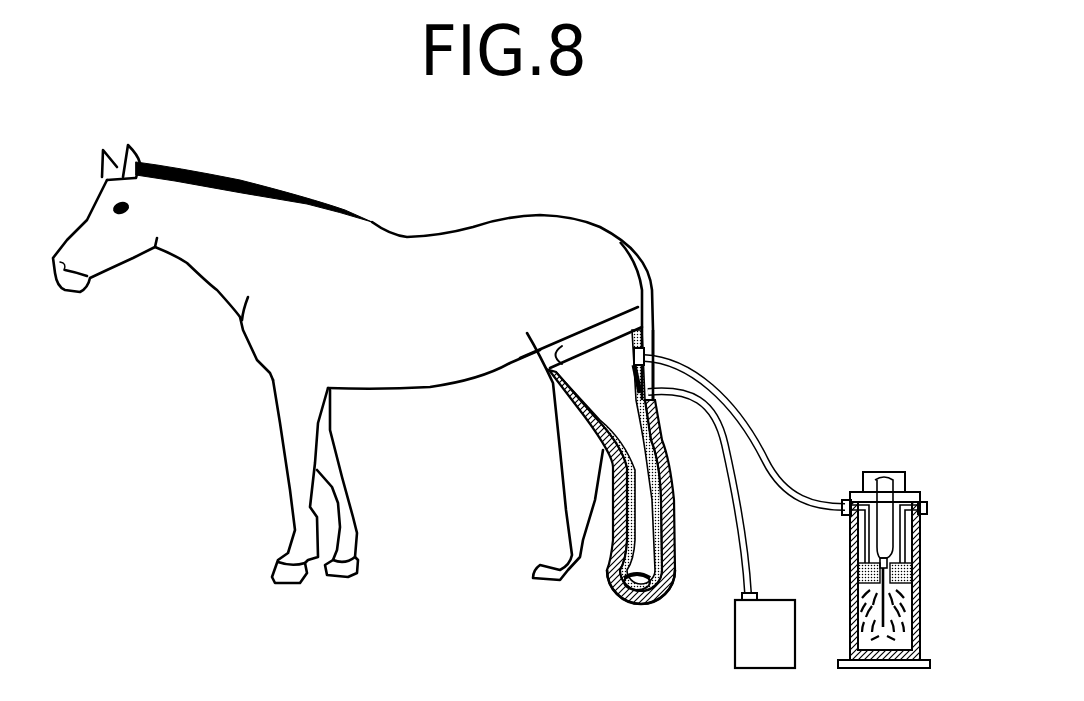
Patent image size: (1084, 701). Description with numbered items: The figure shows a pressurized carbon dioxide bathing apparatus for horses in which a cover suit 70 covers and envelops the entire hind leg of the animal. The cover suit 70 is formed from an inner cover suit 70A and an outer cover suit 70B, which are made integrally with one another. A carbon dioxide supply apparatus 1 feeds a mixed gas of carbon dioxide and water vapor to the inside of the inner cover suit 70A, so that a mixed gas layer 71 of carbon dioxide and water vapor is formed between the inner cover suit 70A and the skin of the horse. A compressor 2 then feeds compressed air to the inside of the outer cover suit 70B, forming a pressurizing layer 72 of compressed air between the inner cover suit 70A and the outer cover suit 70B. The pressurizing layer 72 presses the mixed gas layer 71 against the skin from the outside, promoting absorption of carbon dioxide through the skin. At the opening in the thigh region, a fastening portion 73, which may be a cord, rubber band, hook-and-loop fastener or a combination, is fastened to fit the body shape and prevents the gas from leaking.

The carbon dioxide supply apparatus 1 is at (908, 492).
The compressor 2 is at (777, 600).
The cover suit 70 is at (666, 287).
The inner cover suit 70A is at (620, 540).
The outer cover suit 70B is at (617, 493).
The mixed gas layer 71 is at (627, 593).
The pressurizing layer 72 is at (653, 603).
The fastening portion 73 is at (653, 310).